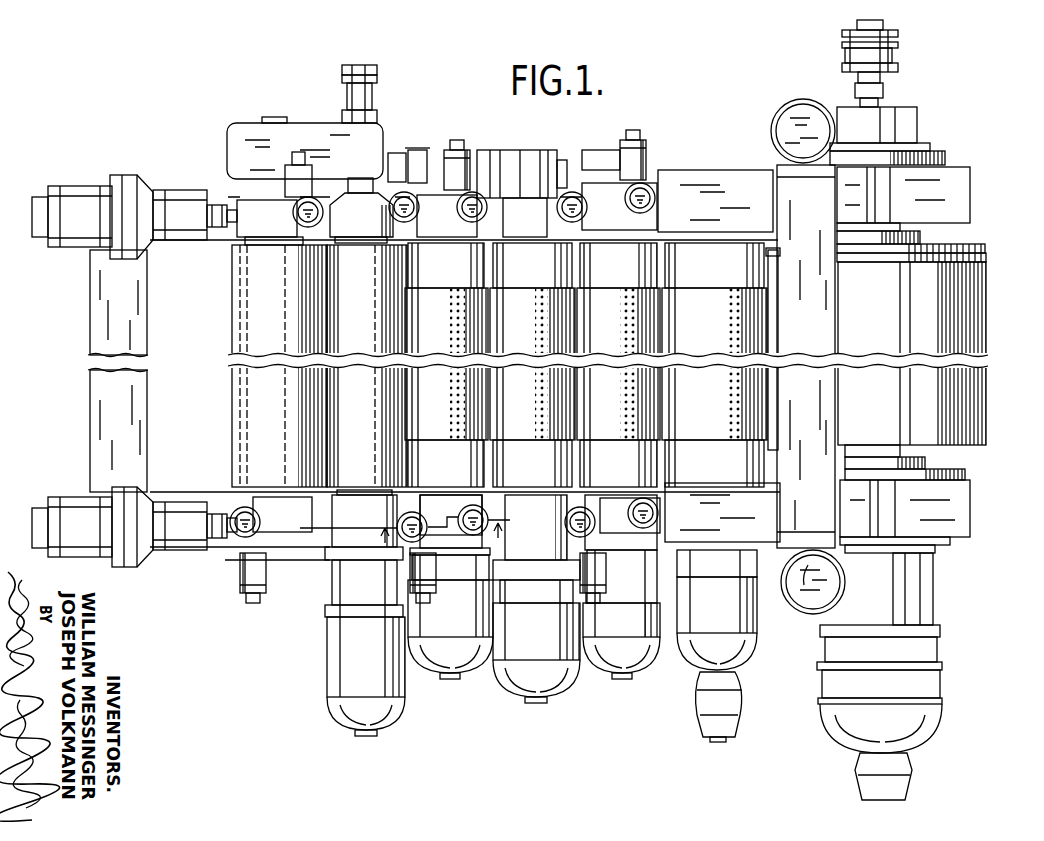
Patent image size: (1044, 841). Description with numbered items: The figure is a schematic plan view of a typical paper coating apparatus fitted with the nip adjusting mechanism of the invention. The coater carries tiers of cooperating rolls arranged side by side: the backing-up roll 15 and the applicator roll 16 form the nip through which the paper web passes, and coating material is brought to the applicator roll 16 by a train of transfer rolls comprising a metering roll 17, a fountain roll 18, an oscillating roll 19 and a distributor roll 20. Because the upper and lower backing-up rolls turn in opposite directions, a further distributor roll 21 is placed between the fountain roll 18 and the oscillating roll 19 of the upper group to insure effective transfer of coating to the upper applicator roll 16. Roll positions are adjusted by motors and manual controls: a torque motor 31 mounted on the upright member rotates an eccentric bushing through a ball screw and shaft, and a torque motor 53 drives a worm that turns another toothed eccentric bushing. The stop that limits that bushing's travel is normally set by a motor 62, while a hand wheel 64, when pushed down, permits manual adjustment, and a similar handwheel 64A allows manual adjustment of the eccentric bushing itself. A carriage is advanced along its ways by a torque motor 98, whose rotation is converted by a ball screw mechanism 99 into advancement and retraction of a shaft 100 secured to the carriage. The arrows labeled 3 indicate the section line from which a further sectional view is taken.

The section line 3- 3 is at (444, 533).
The backing-up roll 15 is at (901, 522).
The applicator roll 16 is at (714, 365).
The metering roll 17 is at (279, 362).
The fountain roll 18 is at (367, 366).
The oscillating roll 19 is at (532, 365).
The distributor roll 20 is at (618, 365).
The distributor roll 21 is at (446, 365).
The torque motor 31 is at (788, 113).
The torque motor 53 is at (416, 196).
The motor 62 is at (457, 140).
The hand wheel 64 is at (460, 212).
The handwheel 64A is at (419, 207).
The torque motor 98 is at (77, 195).
The ball screw mechanism 99 is at (181, 192).
The shaft 100 is at (233, 212).